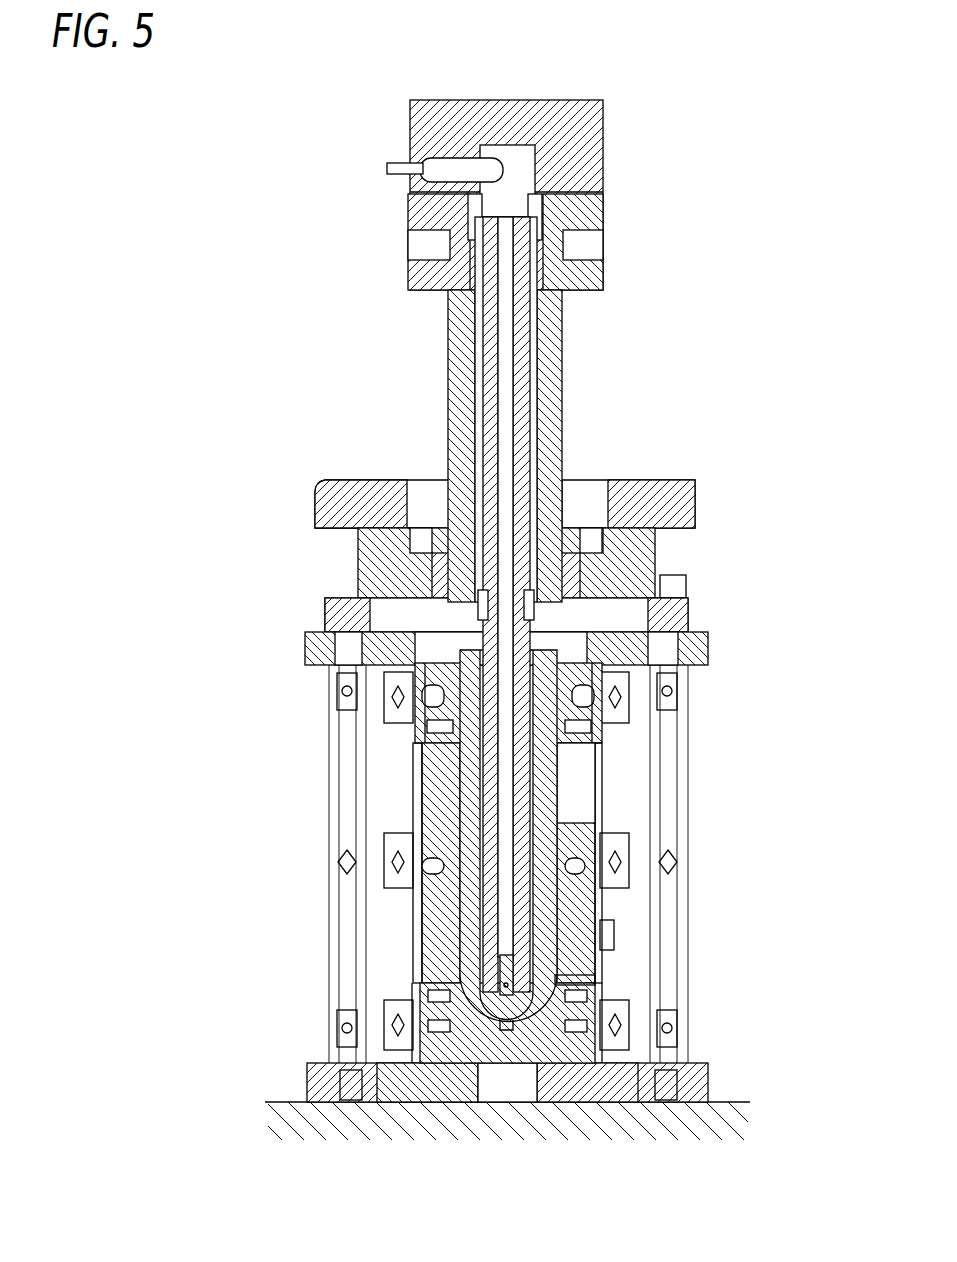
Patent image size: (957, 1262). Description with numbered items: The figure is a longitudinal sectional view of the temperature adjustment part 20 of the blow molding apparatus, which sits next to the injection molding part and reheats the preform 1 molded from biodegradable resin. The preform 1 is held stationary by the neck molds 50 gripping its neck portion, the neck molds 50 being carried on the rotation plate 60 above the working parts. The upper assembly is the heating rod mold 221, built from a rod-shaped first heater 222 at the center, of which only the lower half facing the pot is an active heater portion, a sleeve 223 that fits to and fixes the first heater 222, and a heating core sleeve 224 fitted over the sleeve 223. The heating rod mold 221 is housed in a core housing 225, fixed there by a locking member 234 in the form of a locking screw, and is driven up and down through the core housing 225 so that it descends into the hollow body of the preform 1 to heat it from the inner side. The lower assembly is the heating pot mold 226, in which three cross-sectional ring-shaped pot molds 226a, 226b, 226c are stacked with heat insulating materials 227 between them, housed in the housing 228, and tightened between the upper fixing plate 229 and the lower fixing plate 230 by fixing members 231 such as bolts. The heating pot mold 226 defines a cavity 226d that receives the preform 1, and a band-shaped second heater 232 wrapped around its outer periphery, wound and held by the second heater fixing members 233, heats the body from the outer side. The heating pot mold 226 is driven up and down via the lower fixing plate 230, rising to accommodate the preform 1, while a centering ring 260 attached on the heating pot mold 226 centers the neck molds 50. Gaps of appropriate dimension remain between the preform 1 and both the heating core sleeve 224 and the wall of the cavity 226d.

The temperature adjustment part 20 is at (712, 195).
The core housing 225 is at (560, 352).
The sleeve 223 is at (545, 388).
The first heater 222 is at (555, 656).
The heating rod mold 221 is at (662, 606).
The heating core sleeve 224 is at (513, 670).
The rotation plate 60 is at (328, 485).
The locking member 234 is at (367, 587).
The neck mold 50 is at (357, 578).
The centering ring 260 is at (340, 598).
The fixing members 231 is at (657, 1067).
The upper fixing plate 229 is at (688, 617).
The heating pot mold 226 is at (485, 850).
The pot mold 226a is at (485, 637).
The pot mold 226b is at (422, 810).
The pot mold 226c is at (415, 1005).
The cavity 226d is at (555, 830).
The preform 1 is at (465, 930).
The second heater fixing members 233 is at (660, 830).
The second heater 232 is at (585, 945).
The housing 228 is at (687, 912).
The heat insulating materials 227 is at (570, 980).
The lower fixing plate 230 is at (695, 1063).